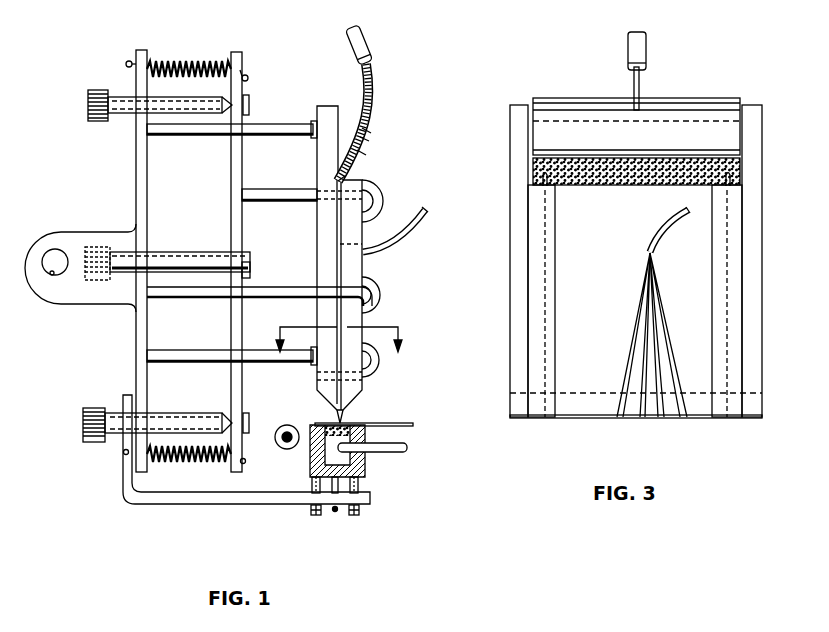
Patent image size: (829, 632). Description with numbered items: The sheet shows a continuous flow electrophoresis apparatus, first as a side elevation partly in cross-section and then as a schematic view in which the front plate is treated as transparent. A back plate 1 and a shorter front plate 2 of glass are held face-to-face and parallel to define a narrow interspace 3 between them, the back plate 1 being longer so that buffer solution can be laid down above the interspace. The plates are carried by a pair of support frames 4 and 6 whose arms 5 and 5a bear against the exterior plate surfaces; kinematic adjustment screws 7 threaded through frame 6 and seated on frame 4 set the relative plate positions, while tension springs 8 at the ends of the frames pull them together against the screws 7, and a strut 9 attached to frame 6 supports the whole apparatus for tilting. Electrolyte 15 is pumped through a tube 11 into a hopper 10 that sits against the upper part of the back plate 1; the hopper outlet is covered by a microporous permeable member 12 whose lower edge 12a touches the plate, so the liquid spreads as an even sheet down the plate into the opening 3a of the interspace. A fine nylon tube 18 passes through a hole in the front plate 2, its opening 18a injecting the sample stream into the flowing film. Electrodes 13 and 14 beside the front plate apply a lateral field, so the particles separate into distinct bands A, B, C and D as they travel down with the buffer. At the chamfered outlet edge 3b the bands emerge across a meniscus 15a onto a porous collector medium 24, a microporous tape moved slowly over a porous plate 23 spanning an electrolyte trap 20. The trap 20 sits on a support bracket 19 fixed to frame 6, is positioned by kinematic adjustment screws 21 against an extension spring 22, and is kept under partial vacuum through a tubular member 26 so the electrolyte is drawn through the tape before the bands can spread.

In FIG. 1, the back plate 1 is at (317, 223).
In FIG. 3, the back plate 1 is at (510, 198).
In FIG. 1, the front plate 2 is at (365, 186).
In FIG. 1, the interspace 3 is at (341, 273).
In FIG. 1, the opening to the interspace 3a is at (348, 181).
In FIG. 1, the outlet edge 3b is at (346, 412).
In FIG. 1, the support frame 4 is at (231, 155).
In FIG. 1, the arms 5 is at (262, 125).
In FIG. 1, the arms 5a is at (250, 192).
In FIG. 1, the support frame 6 is at (136, 147).
In FIG. 1, the kinematic adjustment screws 7 is at (121, 97).
In FIG. 1, the tension springs 8 is at (197, 62).
In FIG. 1, the strut 9 is at (42, 236).
In FIG. 1, the hopper 10 is at (364, 117).
In FIG. 3, the hopper 10 is at (733, 130).
In FIG. 1, the tube 11 is at (371, 36).
In FIG. 3, the tube 11 is at (657, 69).
In FIG. 1, the permeable member 12 is at (363, 152).
In FIG. 3, the permeable member 12 is at (733, 169).
In FIG. 1, the lower edge of permeable member 12a is at (338, 181).
In FIG. 3, the lower edge of permeable member 12a is at (581, 187).
In FIG. 3, the electrode 13 is at (545, 256).
In FIG. 3, the electrode 14 is at (728, 272).
In FIG. 1, the electrolyte 15 is at (366, 131).
In FIG. 1, the meniscus 15a is at (332, 416).
In FIG. 1, the nylon tube 18 is at (427, 216).
In FIG. 3, the nylon tube 18 is at (666, 234).
In FIG. 1, the opening of the tube 18a is at (340, 244).
In FIG. 1, the support bracket 19 is at (180, 504).
In FIG. 1, the electrolyte trap 20 is at (366, 468).
In FIG. 1, the kinematic adjustment screws 21 is at (364, 488).
In FIG. 1, the extension spring 22 is at (336, 512).
In FIG. 1, the porous plate 23 is at (311, 460).
In FIG. 1, the porous collector medium 24 is at (400, 424).
In FIG. 1, the tubular member 26 is at (408, 446).
In FIG. 3, the band A is at (640, 310).
In FIG. 3, the band B is at (643, 352).
In FIG. 3, the band C is at (653, 317).
In FIG. 3, the band D is at (667, 355).